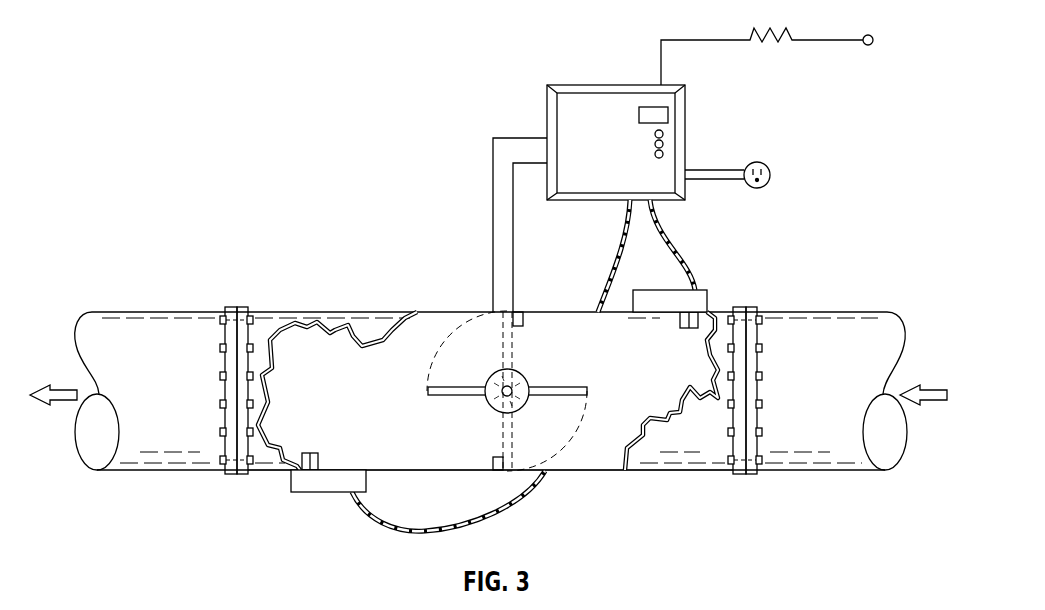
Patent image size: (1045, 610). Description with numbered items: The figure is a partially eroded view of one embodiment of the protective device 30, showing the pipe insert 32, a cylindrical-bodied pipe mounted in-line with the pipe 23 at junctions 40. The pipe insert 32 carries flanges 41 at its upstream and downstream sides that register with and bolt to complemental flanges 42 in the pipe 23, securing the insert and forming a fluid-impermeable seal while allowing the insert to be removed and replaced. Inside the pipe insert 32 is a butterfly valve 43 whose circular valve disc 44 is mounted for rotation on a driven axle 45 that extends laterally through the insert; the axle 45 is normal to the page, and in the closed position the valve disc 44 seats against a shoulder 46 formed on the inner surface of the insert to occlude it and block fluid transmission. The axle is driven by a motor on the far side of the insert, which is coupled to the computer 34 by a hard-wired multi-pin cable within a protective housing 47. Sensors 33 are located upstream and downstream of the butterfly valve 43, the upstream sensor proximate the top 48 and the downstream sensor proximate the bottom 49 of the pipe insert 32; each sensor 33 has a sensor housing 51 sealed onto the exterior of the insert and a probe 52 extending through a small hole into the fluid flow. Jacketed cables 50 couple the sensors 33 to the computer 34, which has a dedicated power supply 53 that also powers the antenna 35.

The pipe 23 is at (147, 310).
The device 30 is at (488, 272).
The pipe insert 32 is at (335, 304).
The sensors 33 is at (543, 397).
The computer 34 is at (688, 124).
The antenna 35 is at (812, 41).
The junctions 40 is at (478, 429).
The flanges 41 is at (243, 476).
The complemental flanges 42 is at (229, 476).
The butterfly valve 43 is at (486, 412).
The valve disc 44 is at (566, 386).
The driven axle 45 is at (511, 388).
The shoulder 46 is at (522, 315).
The protective housing 47 is at (492, 241).
The top 48 is at (730, 310).
The bottom 49 is at (282, 472).
The jacketed cables 50 is at (672, 233).
The sensor housing 51 is at (695, 288).
The probe 52 is at (320, 460).
The power supply 53 is at (771, 175).